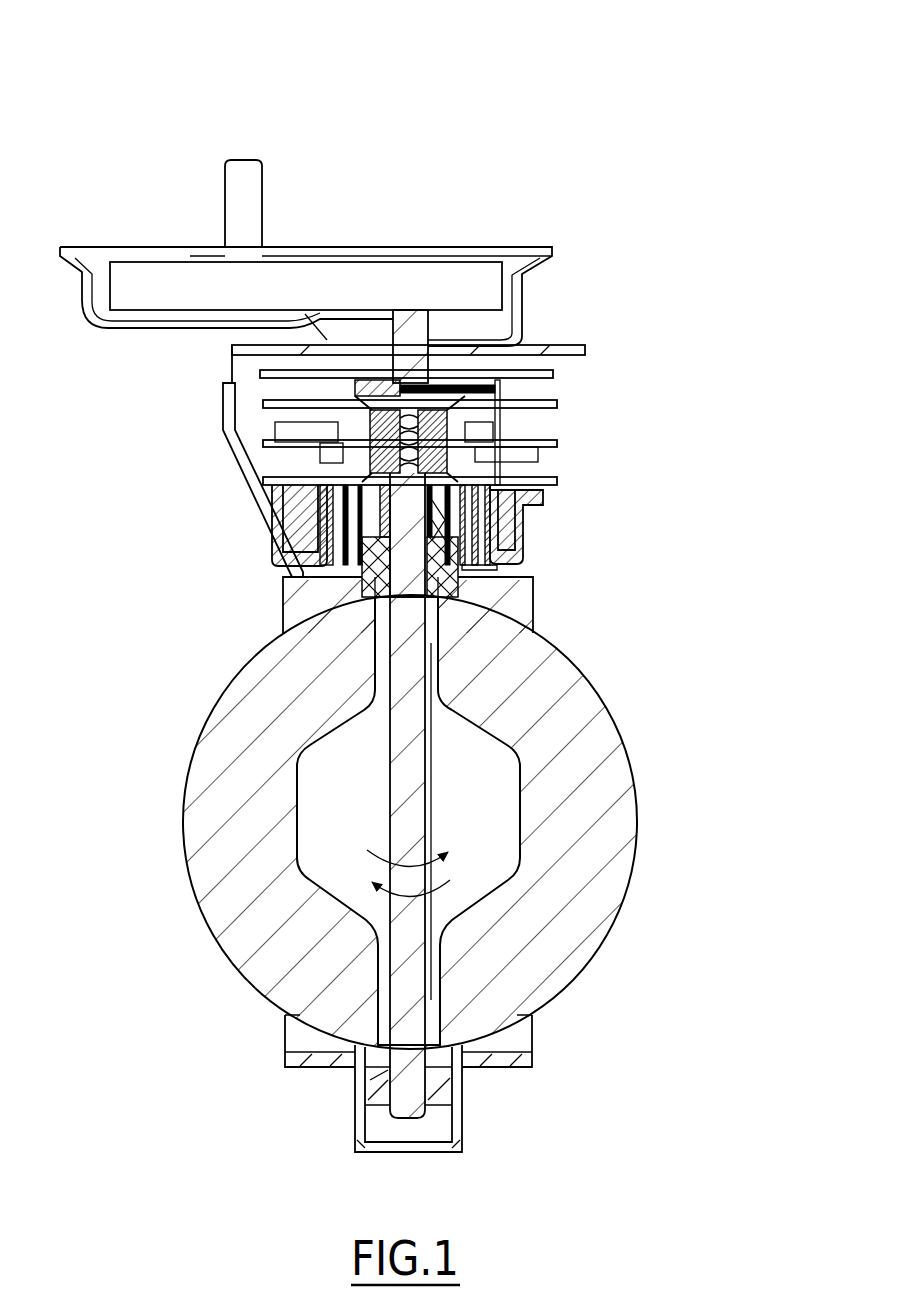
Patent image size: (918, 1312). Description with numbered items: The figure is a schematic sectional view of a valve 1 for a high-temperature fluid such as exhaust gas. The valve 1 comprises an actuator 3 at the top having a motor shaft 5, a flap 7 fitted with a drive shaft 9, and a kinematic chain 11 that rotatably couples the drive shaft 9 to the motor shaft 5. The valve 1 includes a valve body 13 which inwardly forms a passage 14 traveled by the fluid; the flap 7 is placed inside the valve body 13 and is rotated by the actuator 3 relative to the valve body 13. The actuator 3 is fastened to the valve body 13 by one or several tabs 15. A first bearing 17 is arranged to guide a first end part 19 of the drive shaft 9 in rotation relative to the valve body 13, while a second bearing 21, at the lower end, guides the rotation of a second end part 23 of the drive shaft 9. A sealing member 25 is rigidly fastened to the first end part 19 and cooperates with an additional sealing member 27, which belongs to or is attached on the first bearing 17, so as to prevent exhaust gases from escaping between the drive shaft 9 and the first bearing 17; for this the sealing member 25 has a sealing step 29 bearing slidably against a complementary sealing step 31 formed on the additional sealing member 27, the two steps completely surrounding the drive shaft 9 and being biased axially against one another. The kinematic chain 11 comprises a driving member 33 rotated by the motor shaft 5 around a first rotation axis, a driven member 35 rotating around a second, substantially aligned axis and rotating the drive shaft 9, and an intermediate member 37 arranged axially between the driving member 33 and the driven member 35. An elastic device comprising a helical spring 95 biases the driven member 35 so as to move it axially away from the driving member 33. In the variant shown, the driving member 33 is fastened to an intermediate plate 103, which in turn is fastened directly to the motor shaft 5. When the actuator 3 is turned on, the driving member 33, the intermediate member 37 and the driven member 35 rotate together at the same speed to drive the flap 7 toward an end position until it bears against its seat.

The valve 1 is at (697, 70).
The actuator 3 is at (366, 283).
The motor shaft 5 is at (413, 326).
The flap 7 is at (600, 790).
The drive shaft 9 is at (410, 843).
The kinematic chain 11 is at (623, 432).
The valve body 13 is at (293, 1060).
The passage 14 is at (510, 1038).
The tab 15 is at (223, 395).
The first bearing 17 is at (290, 600).
The first end part 19 is at (410, 560).
The second bearing 21 is at (446, 1106).
The second end part 23 is at (413, 1093).
The sealing member 25 is at (377, 527).
The additional sealing member 27 is at (377, 553).
The sealing step 29 is at (497, 498).
The complementary sealing step 31 is at (444, 536).
The driving member 33 is at (550, 404).
The driven member 35 is at (548, 481).
The intermediate member 37 is at (368, 462).
The helical spring 95 is at (365, 498).
The intermediate plate 103 is at (553, 376).